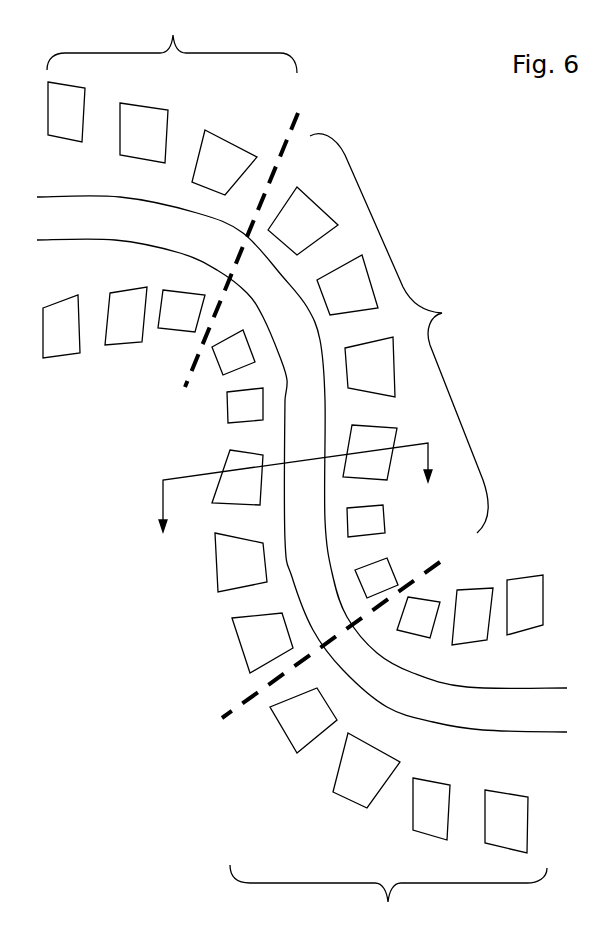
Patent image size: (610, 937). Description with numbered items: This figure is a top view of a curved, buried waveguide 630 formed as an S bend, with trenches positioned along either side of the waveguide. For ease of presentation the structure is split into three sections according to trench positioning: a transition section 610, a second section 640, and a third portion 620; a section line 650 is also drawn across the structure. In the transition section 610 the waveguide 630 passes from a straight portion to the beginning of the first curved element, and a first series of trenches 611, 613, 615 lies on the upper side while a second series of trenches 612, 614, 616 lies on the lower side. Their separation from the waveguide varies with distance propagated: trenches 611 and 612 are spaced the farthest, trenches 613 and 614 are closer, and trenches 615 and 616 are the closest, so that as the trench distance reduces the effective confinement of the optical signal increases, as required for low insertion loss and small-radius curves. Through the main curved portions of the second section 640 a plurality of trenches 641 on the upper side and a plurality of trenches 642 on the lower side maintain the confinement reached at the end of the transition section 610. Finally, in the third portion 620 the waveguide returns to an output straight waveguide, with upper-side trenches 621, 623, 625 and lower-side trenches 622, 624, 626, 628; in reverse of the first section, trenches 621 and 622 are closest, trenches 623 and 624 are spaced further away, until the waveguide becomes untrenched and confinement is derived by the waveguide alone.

The transition section 610 is at (172, 58).
The trench 611 is at (66, 112).
The trench 612 is at (61, 326).
The trench 613 is at (144, 133).
The trench 614 is at (126, 316).
The trench 615 is at (224, 162).
The trench 616 is at (181, 311).
The third portion 620 is at (388, 881).
The trench 621 is at (418, 617).
The trench 622 is at (303, 720).
The trench 623 is at (472, 616).
The trench 624 is at (366, 770).
The trench 625 is at (525, 605).
The trench 626 is at (431, 809).
The trench 628 is at (506, 821).
The curved buried waveguide 630 is at (302, 464).
The second section 640 is at (404, 333).
The trenches 641 is at (331, 292).
The trenches 642 is at (252, 561).
The section line 650 is at (269, 487).